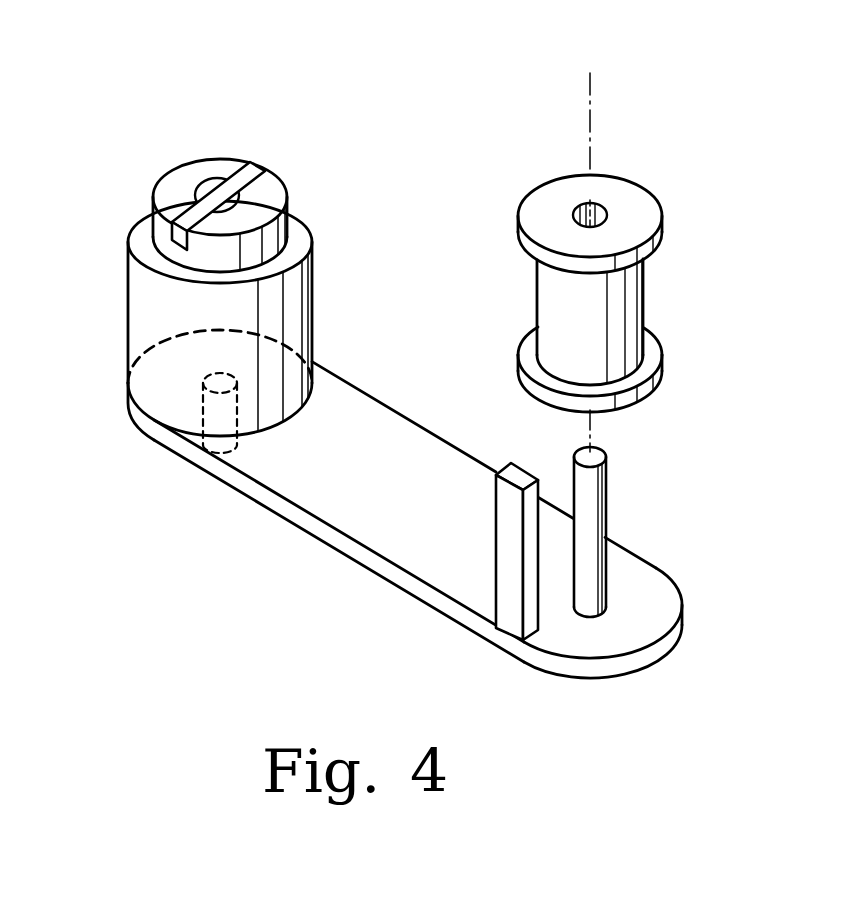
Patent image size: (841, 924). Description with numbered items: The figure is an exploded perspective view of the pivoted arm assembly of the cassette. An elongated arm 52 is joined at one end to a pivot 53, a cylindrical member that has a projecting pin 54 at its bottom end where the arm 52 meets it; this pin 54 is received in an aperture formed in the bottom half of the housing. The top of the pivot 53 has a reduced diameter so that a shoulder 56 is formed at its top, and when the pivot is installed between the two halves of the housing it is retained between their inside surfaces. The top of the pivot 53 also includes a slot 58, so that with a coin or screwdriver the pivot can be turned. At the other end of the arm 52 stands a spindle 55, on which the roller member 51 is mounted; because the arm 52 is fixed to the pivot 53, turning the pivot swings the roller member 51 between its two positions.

The roller member 51 is at (647, 188).
The arm 52 is at (650, 667).
The pivot 53 is at (140, 202).
The projecting pin 54 is at (203, 412).
The spindle 55 is at (608, 518).
The shoulder 56 is at (293, 222).
The slot 58 is at (247, 175).